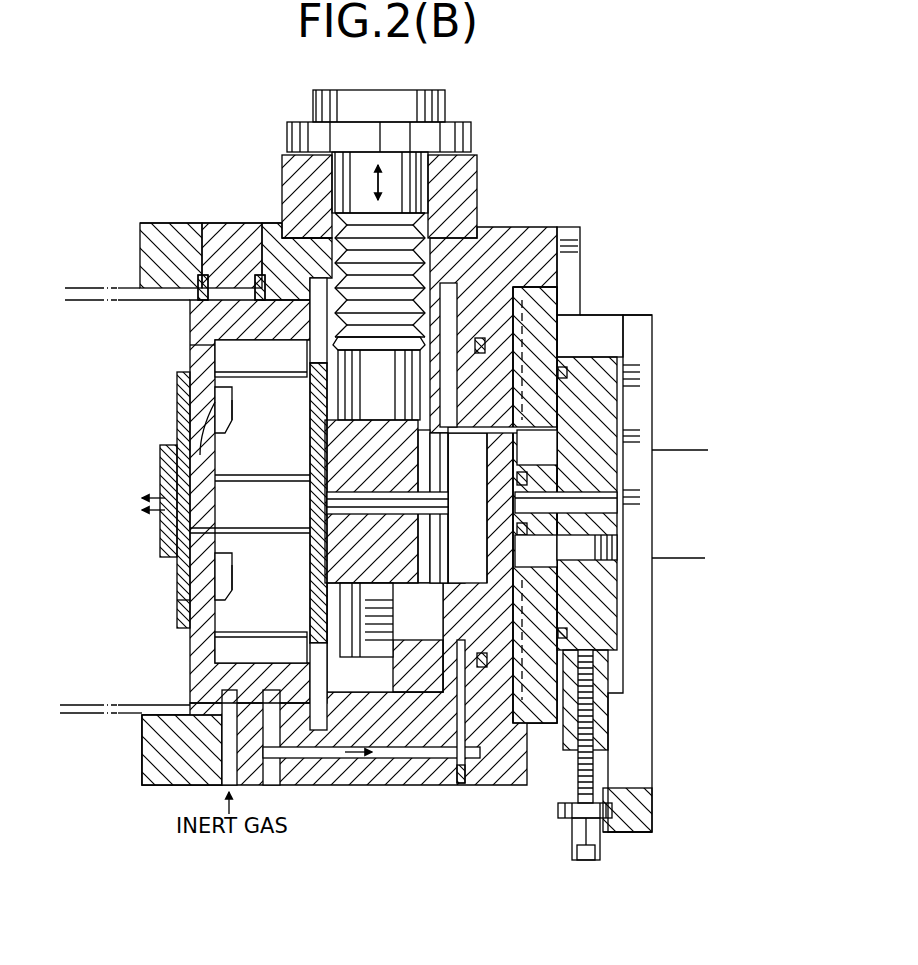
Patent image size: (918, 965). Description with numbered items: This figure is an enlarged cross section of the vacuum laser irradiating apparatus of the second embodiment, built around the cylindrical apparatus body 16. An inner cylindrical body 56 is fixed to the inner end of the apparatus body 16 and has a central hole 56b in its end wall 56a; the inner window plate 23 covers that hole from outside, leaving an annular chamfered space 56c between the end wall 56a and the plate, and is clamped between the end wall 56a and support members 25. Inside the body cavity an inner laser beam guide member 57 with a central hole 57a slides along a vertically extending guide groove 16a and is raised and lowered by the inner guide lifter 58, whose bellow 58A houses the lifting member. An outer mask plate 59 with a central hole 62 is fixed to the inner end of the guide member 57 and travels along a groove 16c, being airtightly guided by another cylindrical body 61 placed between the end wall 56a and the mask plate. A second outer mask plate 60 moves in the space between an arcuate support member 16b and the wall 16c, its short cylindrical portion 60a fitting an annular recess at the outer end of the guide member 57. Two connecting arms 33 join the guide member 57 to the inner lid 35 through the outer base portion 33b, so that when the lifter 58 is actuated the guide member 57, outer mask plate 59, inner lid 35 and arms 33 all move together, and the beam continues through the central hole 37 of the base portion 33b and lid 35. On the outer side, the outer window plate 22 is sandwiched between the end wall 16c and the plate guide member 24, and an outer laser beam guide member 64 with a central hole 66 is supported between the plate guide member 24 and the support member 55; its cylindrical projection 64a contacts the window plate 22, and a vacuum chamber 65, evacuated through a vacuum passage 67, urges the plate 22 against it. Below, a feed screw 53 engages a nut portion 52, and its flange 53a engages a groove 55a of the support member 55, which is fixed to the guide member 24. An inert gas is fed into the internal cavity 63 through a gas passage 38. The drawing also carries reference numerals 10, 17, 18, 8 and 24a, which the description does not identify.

The ion implantation apparatus 10 is at (134, 184).
The block 17 is at (163, 222).
The block 18 is at (217, 222).
The pipe 8 is at (118, 288).
The apparatus body 16 is at (510, 226).
The guide groove 16a is at (388, 606).
The arcuate support member 16b is at (448, 342).
The end wall 16c is at (306, 280).
The plate guide member 24 is at (560, 228).
The flange portion 24a is at (648, 434).
The inner cylindrical body 56 is at (203, 323).
The end wall 56a is at (196, 352).
The central hole 56b is at (212, 404).
The annular chamfered space 56c is at (222, 402).
The cylindrical body 61 is at (252, 378).
The support members 25 is at (232, 413).
The connecting arms 33 is at (262, 474).
The outer base portion 33b is at (162, 460).
The central hole 62 is at (312, 500).
The central hole 37 is at (165, 512).
The inner window plate 23 is at (175, 563).
The inner lid 35 is at (178, 605).
The inner guide lifter 58 is at (410, 187).
The bellow 58A is at (410, 232).
The outer mask plate 59 is at (340, 348).
The outer mask plate 60 is at (425, 362).
The cylindrical portion 60a is at (469, 508).
The internal cavity 63 is at (482, 540).
The inner laser beam guide member 57 is at (370, 573).
The central hole 57a is at (432, 450).
The gas passage 38 is at (415, 757).
The outer window plate 22 is at (605, 418).
The outer laser beam guide member 64 is at (653, 397).
The cylindrical projection 64a is at (534, 466).
The central hole 66 is at (615, 494).
The vacuum chamber 65 is at (548, 550).
The vacuum passage 67 is at (613, 548).
The nut portion 52 is at (607, 735).
The feed screw 53 is at (598, 770).
The flange 53a is at (560, 814).
The support member 55 is at (653, 803).
The groove 55a is at (625, 836).